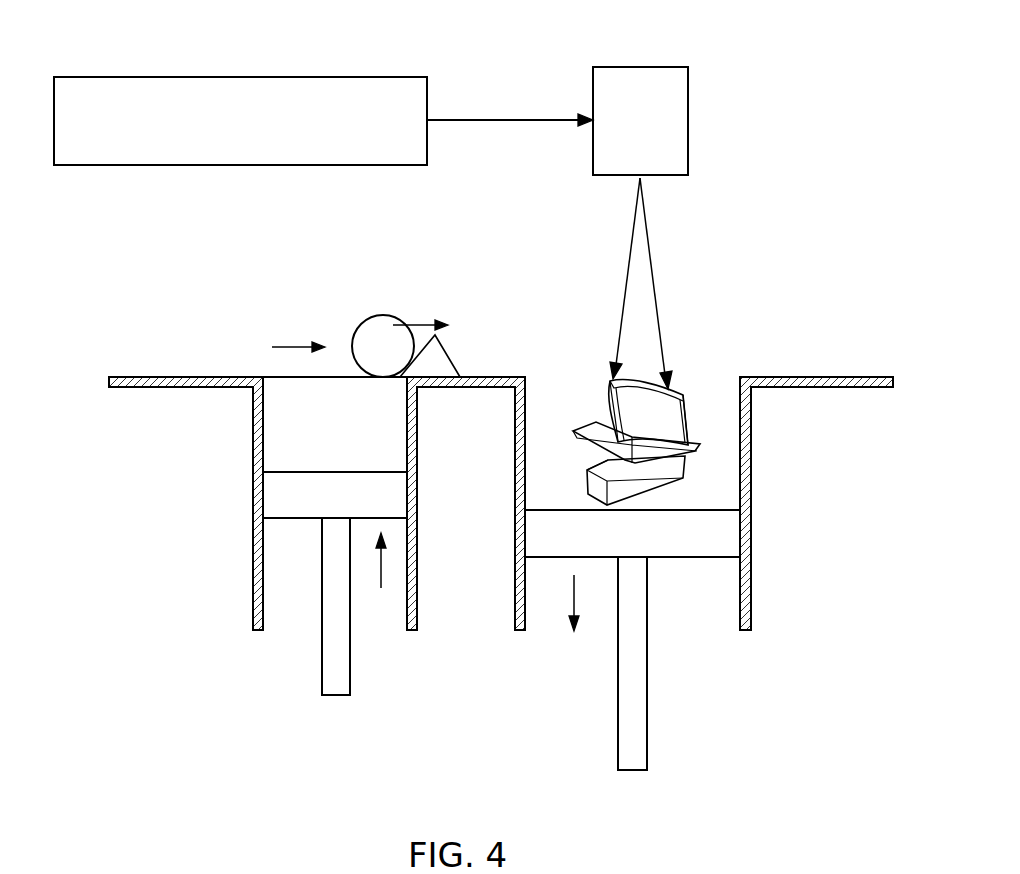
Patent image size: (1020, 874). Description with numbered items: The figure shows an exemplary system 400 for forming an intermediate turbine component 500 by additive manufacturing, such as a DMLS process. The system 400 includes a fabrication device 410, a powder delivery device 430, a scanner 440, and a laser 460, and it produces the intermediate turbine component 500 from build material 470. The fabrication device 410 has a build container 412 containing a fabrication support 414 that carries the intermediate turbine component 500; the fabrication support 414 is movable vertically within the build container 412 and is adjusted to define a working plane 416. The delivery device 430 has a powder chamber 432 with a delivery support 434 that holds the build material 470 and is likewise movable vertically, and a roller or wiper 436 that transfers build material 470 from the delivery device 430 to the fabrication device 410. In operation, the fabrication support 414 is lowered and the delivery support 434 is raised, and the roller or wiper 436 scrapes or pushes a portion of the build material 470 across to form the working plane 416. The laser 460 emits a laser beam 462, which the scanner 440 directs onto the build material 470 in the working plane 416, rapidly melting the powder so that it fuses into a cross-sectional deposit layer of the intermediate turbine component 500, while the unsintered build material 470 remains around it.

The system 400 is at (802, 86).
The fabrication device 410 is at (710, 545).
The build container 412 is at (748, 405).
The fabrication support 414 is at (733, 531).
The working plane 416 is at (713, 378).
The powder delivery device 430 is at (293, 480).
The powder chamber 432 is at (256, 438).
The delivery support 434 is at (267, 500).
The roller or wiper 436 is at (384, 316).
The scanner 440 is at (642, 66).
The laser 460 is at (248, 76).
The laser beam 462 is at (508, 118).
The build material 470 is at (276, 415).
The intermediate turbine component 500 is at (677, 422).